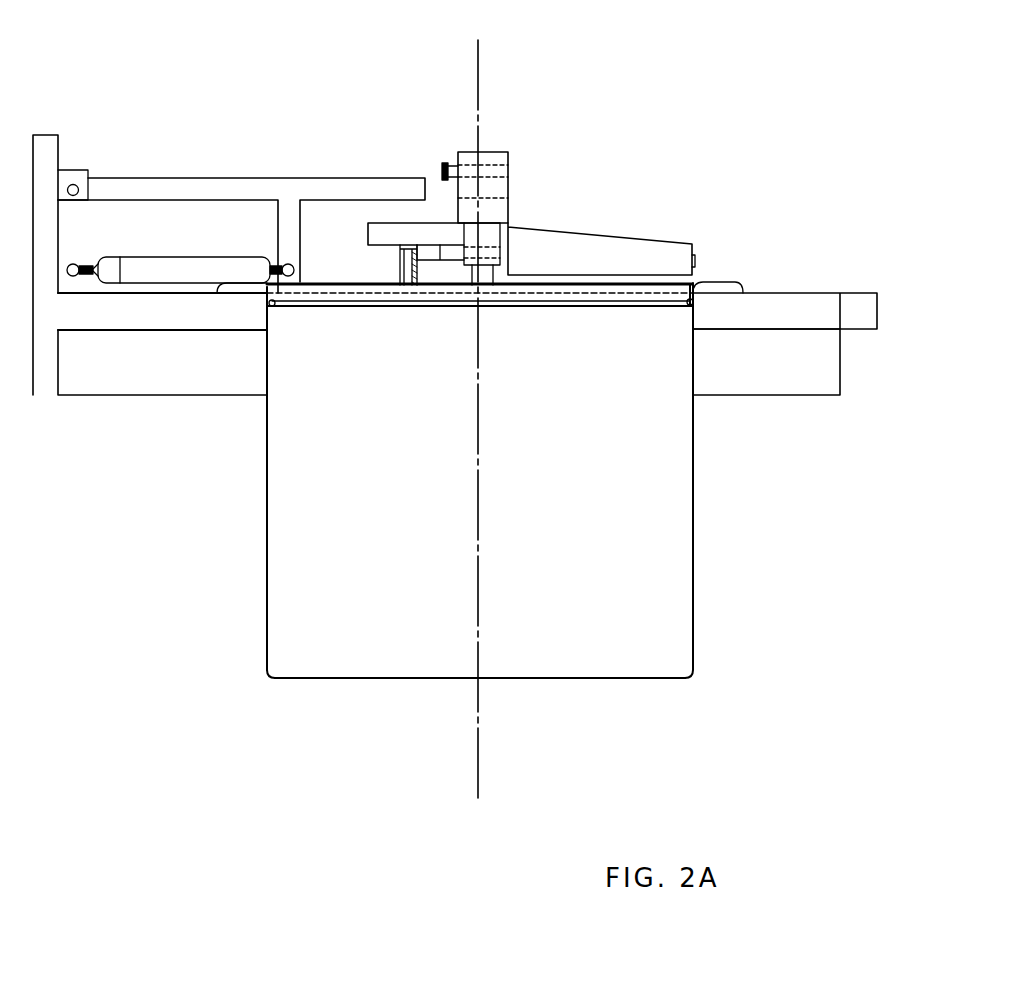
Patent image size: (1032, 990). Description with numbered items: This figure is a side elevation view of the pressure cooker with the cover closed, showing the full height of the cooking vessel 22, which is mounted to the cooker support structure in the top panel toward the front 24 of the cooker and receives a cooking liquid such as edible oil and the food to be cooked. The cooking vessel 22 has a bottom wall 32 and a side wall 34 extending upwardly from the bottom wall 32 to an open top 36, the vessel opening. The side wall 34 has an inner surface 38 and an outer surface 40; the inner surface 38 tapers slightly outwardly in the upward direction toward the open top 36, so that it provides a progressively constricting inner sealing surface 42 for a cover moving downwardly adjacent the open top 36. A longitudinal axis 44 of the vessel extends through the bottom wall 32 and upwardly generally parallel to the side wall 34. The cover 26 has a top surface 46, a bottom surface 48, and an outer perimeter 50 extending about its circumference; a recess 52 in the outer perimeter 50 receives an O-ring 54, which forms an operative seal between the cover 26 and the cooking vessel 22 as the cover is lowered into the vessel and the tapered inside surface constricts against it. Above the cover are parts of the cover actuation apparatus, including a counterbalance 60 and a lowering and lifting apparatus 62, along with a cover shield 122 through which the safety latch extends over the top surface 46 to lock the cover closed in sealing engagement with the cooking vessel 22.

The cooking vessel 22 is at (693, 540).
The front 24 is at (877, 310).
The cover 26 is at (551, 280).
The bottom wall 32 is at (412, 680).
The side wall 34 is at (267, 553).
The open top 36 is at (660, 282).
The inner surface 38 is at (275, 456).
The outer surface 40 is at (267, 631).
The inner sealing surface 42 is at (693, 372).
The longitudinal axis 44 is at (480, 773).
The top surface 46 is at (597, 283).
The bottom surface 48 is at (588, 307).
The outer perimeter 50 is at (693, 292).
The recess 52 is at (688, 303).
The O-ring 54 is at (694, 303).
The counterbalance 60 is at (193, 257).
The lowering and lifting apparatus 62 is at (493, 152).
The cover shield 122 is at (532, 230).